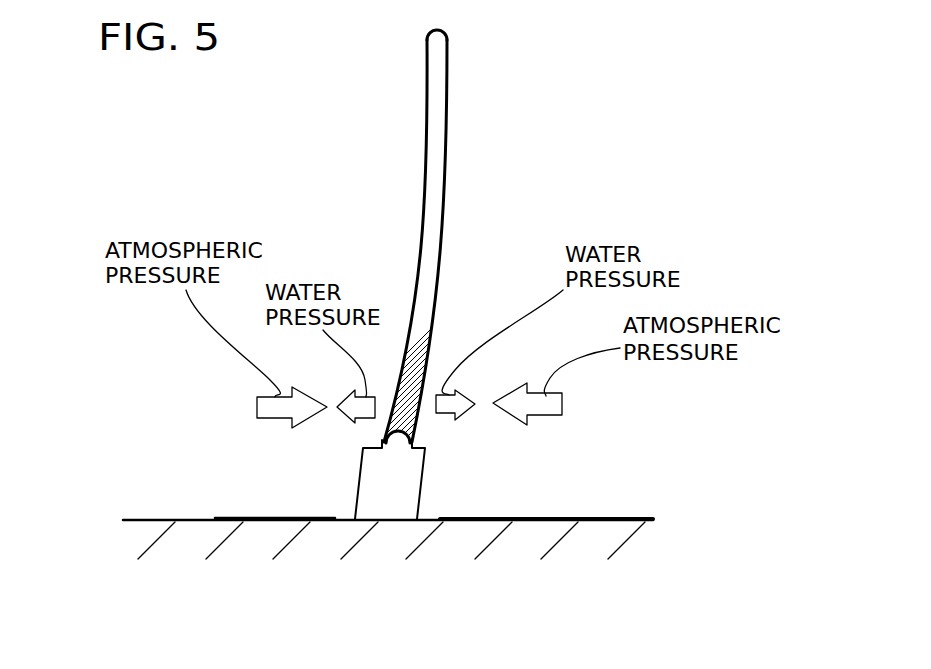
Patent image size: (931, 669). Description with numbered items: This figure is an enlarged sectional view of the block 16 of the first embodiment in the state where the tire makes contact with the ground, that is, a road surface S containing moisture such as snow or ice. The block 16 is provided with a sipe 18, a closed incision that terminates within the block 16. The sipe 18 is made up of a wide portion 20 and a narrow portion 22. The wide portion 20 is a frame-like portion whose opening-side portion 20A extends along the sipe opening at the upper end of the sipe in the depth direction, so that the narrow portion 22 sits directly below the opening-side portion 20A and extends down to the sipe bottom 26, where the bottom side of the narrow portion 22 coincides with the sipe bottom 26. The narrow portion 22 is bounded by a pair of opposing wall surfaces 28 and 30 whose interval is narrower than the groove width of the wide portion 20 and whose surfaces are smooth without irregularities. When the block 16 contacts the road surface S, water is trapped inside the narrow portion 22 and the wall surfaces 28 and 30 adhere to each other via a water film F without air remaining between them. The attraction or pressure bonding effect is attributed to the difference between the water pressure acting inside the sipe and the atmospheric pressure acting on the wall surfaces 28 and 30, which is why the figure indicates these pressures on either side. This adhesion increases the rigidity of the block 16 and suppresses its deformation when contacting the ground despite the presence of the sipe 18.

The block 16 is at (384, 497).
The sipe 18 is at (598, 240).
The wide portion 20 is at (480, 479).
The opening-side portion 20A is at (408, 493).
The narrow portion 22 is at (443, 159).
The sipe bottom 26 is at (432, 29).
The wall surface 28 is at (434, 262).
The wall surface 30 is at (416, 259).
The water film F is at (598, 240).
The road surface S is at (152, 520).